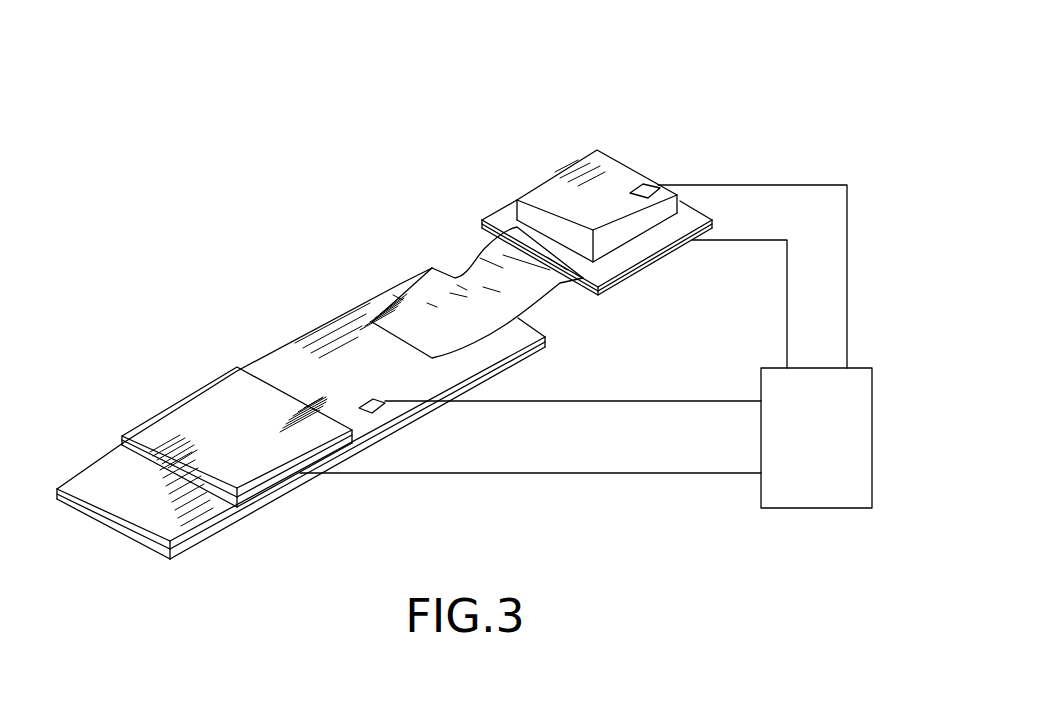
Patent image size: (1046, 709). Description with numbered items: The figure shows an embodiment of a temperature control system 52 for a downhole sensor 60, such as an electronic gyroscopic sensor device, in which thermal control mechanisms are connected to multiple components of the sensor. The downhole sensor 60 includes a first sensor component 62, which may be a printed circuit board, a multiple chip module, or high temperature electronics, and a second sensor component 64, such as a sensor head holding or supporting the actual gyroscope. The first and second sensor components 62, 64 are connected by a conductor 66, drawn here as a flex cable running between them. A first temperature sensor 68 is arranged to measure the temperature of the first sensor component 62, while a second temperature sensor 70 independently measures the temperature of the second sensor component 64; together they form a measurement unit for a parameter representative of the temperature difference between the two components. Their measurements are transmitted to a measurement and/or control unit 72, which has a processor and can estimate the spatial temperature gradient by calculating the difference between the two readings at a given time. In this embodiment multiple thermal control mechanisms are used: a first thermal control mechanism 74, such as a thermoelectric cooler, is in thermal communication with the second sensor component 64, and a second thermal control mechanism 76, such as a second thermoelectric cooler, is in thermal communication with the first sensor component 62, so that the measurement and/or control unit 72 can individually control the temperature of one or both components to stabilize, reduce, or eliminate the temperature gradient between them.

The temperature control system 52 is at (775, 146).
The downhole sensor 60 is at (340, 291).
The first sensor component 62 is at (97, 480).
The second sensor component 64 is at (580, 172).
The conductor 66 is at (521, 295).
The first temperature sensor 68 is at (372, 402).
The second temperature sensor 70 is at (642, 190).
The measurement and/or control unit 72 is at (803, 452).
The first thermal control mechanism 74 is at (499, 209).
The second thermal control mechanism 76 is at (145, 425).